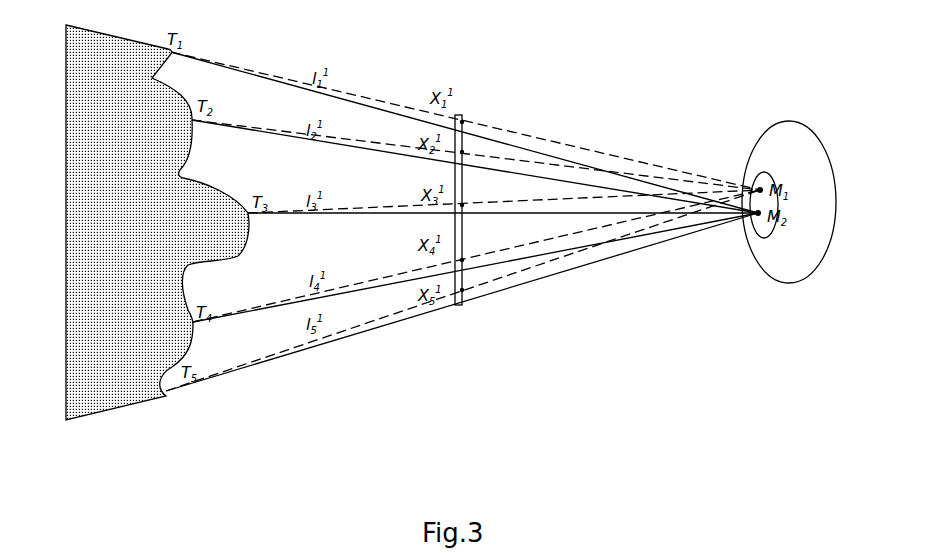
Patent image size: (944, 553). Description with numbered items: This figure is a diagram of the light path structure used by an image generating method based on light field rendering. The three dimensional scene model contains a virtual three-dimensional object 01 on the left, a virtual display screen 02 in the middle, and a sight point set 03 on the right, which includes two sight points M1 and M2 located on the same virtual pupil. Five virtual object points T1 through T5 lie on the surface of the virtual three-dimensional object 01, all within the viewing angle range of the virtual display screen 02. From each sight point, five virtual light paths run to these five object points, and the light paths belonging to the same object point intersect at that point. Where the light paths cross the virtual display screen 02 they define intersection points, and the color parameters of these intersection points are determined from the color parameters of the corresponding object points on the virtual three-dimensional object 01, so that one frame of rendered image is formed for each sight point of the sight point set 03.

The virtual three-dimensional object 01 is at (122, 393).
The virtual display screen 02 is at (462, 305).
The sight point set 03 is at (762, 239).